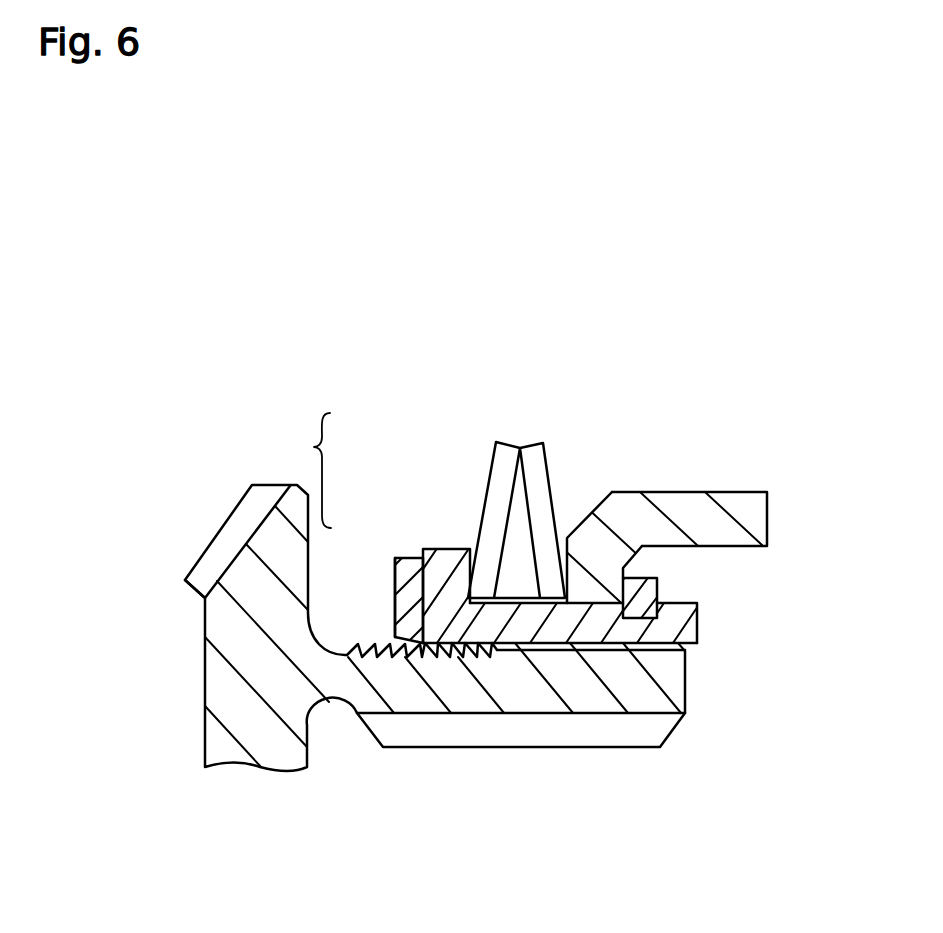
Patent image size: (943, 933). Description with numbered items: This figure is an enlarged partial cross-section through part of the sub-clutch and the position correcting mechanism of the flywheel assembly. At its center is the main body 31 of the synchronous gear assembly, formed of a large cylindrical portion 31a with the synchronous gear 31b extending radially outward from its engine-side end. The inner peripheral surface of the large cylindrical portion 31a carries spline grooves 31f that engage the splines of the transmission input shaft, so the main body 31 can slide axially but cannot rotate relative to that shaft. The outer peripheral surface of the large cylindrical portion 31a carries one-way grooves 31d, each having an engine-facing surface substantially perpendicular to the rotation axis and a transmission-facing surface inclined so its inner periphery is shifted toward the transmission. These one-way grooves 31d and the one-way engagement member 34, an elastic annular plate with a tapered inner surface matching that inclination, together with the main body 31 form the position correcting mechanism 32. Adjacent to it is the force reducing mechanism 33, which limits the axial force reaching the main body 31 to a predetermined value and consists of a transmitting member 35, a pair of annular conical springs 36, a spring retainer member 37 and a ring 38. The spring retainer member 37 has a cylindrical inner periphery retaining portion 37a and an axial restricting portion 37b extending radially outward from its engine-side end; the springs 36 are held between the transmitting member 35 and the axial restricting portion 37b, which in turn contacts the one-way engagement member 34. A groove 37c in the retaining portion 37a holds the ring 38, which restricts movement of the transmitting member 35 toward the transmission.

The main body 31 is at (192, 702).
The large cylindrical portion 31a is at (492, 680).
The synchronous gear 31b is at (220, 556).
The one-way grooves 31d is at (376, 640).
The spline grooves 31f is at (585, 722).
The position correcting mechanism 32 is at (293, 470).
The force reducing mechanism 33 is at (650, 420).
The one-way engagement member 34 is at (408, 567).
The transmitting member 35 is at (711, 512).
The springs 36 is at (536, 462).
The spring retainer member 37 is at (558, 659).
The inner periphery retaining portion 37a is at (603, 647).
The axial restricting portion 37b is at (452, 567).
The groove 37c is at (650, 620).
The ring 38 is at (652, 591).